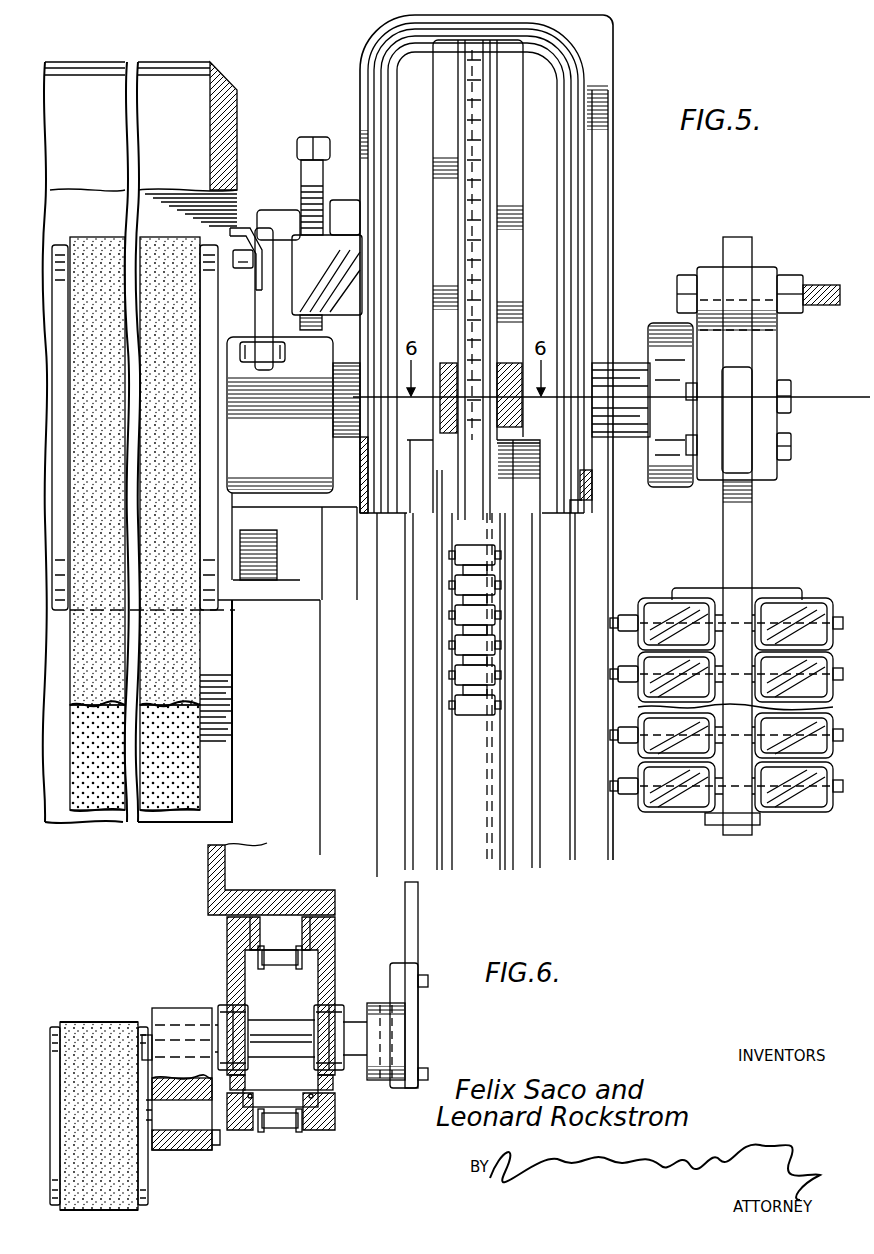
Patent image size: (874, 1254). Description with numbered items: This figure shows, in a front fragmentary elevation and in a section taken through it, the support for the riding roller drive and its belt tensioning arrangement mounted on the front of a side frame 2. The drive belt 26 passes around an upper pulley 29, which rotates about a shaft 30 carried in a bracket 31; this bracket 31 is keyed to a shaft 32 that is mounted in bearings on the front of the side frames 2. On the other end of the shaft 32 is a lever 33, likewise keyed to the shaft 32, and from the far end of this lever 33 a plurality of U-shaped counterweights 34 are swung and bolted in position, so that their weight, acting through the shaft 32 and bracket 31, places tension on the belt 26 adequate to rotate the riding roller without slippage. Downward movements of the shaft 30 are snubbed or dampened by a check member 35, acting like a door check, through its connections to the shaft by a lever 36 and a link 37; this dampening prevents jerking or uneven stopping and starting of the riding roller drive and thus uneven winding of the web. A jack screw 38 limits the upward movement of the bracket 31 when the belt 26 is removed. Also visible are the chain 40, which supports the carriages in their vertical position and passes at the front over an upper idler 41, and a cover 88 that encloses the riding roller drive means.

In FIG. 5, the side frame 2 is at (603, 80).
In FIG. 6, the side frame 2 is at (293, 890).
In FIG. 5, the belt 26 is at (200, 668).
In FIG. 6, the belt 26 is at (124, 1022).
In FIG. 5, the upper pulley 29 is at (218, 612).
In FIG. 6, the upper pulley 29 is at (52, 1026).
In FIG. 5, the shaft 30 is at (340, 452).
In FIG. 6, the shaft 30 is at (177, 1079).
In FIG. 5, the bracket 31 is at (283, 299).
In FIG. 6, the bracket 31 is at (198, 1150).
In FIG. 5, the shaft 32 is at (631, 362).
In FIG. 6, the shaft 32 is at (278, 1022).
In FIG. 5, the lever 33 is at (734, 242).
In FIG. 6, the lever 33 is at (419, 922).
In FIG. 5, the U-shaped counterweights 34 is at (689, 798).
In FIG. 5, the check member 35 is at (290, 212).
In FIG. 5, the lever 36 is at (262, 243).
In FIG. 5, the link 37 is at (281, 300).
In FIG. 5, the jack screw 38 is at (306, 140).
In FIG. 5, the chain 40 is at (482, 640).
In FIG. 6, the chain 40 is at (300, 960).
In FIG. 5, the upper idler 41 is at (475, 108).
In FIG. 5, the cover 88 is at (139, 442).